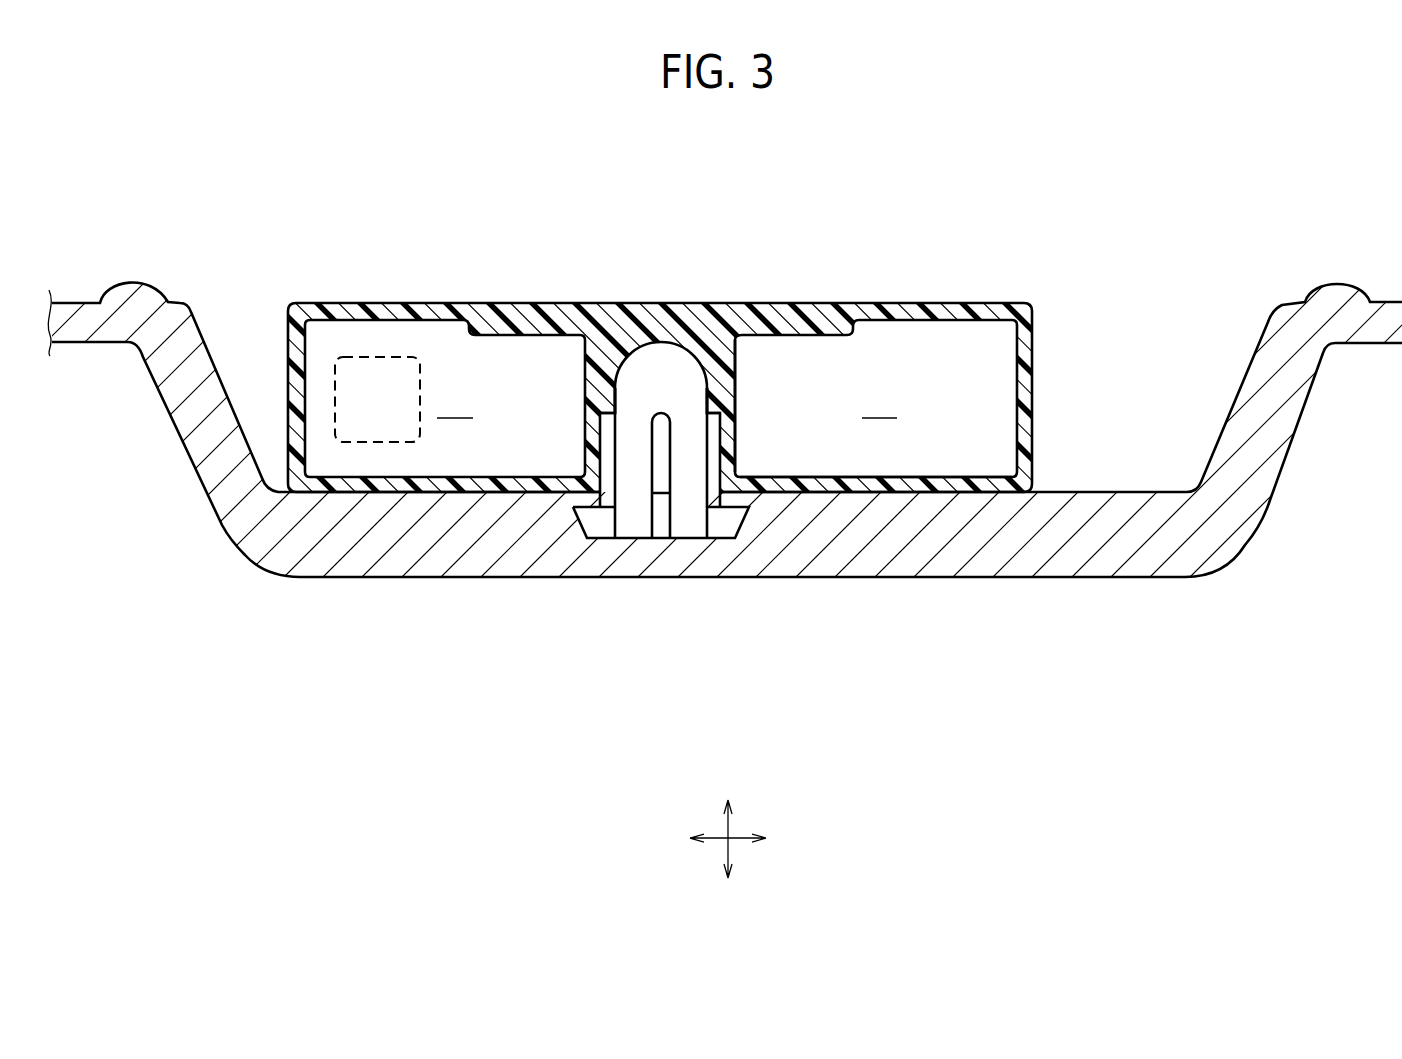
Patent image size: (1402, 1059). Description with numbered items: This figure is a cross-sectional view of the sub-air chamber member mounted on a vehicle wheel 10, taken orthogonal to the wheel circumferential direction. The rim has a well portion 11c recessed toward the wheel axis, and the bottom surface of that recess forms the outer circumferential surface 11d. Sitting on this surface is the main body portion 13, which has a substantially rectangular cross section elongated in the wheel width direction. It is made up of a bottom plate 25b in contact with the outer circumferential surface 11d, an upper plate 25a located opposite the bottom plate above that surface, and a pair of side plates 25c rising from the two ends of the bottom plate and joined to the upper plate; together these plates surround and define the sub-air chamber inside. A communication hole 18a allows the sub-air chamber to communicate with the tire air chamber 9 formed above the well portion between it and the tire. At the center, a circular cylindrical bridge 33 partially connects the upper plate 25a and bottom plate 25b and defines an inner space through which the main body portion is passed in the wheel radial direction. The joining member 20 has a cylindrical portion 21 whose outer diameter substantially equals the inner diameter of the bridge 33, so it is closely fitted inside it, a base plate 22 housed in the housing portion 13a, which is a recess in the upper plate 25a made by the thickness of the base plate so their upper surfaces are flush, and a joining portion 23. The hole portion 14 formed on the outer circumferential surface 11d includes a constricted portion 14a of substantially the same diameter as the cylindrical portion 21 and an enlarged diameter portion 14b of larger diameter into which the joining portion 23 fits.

The tire air chamber 9 is at (672, 220).
The battery case 10 is at (943, 306).
The main body portion 13 is at (659, 354).
The housing portion 13a is at (498, 306).
The well portion 11c is at (430, 470).
The outer circumferential surface 11d is at (701, 452).
The hole portion 14 is at (619, 514).
The constricted portion 14a is at (612, 495).
The enlarged diameter portion 14b is at (612, 505).
The communication hole 18a is at (372, 356).
The joining member 20 is at (868, 246).
The cylindrical portion 21 is at (739, 396).
The base plate 22 is at (809, 312).
The joining portion 23 is at (725, 522).
The upper plate 25a is at (422, 306).
The bottom plate 25b is at (362, 490).
The side plates 25c is at (293, 372).
The bridge 33 is at (597, 402).